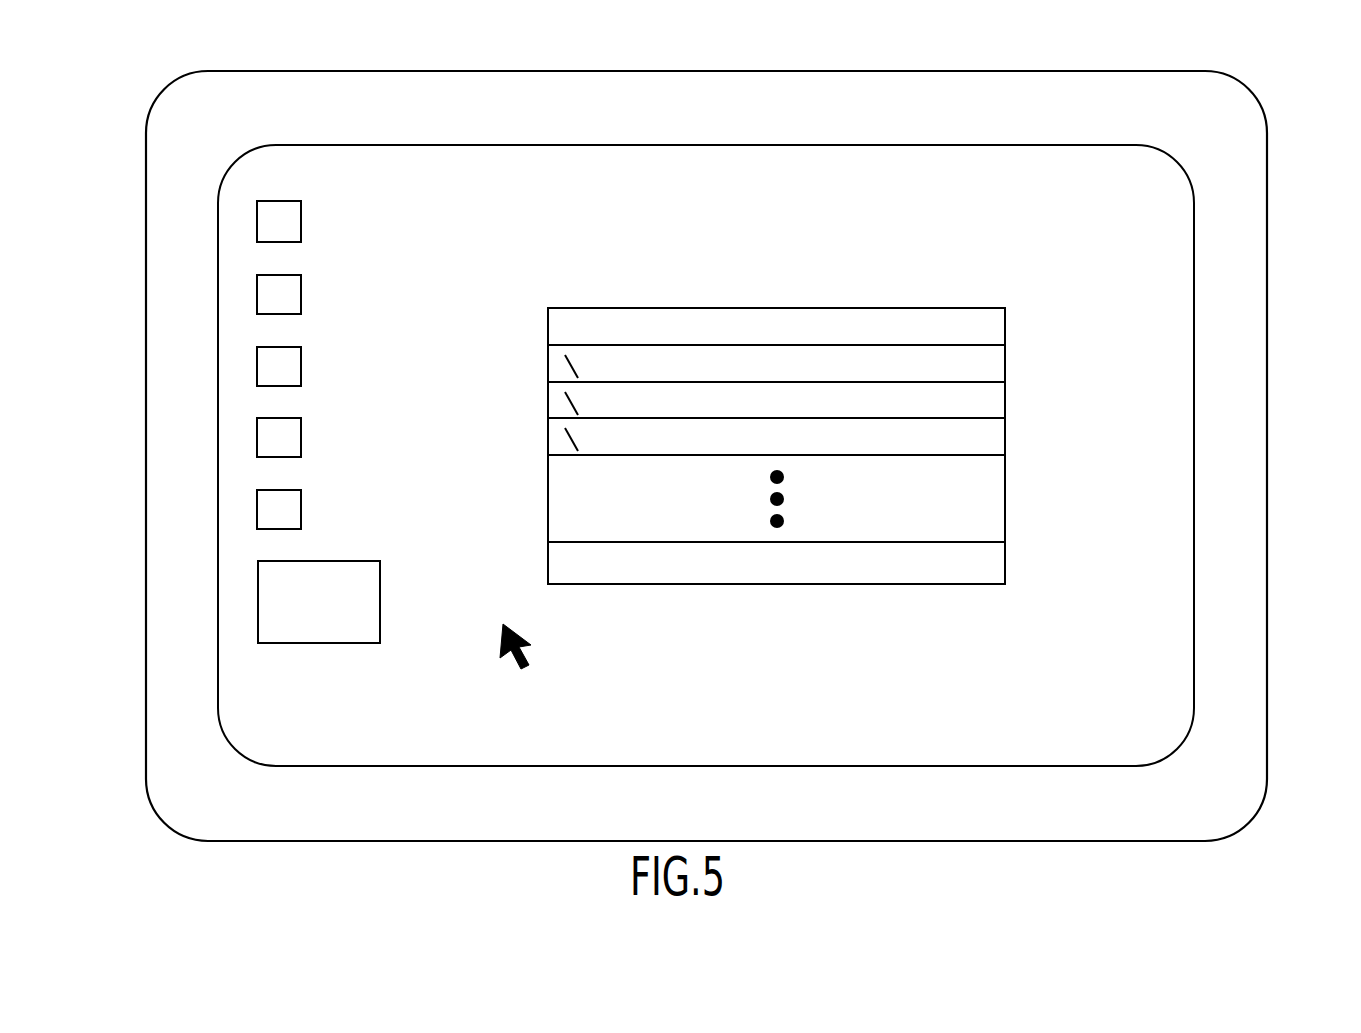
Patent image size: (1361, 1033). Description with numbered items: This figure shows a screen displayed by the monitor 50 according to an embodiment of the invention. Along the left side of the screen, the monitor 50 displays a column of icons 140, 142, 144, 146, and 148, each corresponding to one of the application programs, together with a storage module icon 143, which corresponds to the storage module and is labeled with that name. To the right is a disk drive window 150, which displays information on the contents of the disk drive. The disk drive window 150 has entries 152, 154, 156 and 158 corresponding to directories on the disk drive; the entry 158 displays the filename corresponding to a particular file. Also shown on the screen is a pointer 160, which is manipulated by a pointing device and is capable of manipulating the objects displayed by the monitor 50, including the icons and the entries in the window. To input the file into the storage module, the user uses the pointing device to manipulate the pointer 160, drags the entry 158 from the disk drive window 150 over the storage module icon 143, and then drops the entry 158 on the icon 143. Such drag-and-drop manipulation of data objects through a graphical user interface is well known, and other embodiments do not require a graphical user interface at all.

The monitor 50 is at (1268, 672).
The icon 140 is at (301, 221).
The icon 142 is at (301, 293).
The storage module icon 143 is at (380, 600).
The icon 144 is at (301, 365).
The icon 146 is at (301, 436).
The icon 148 is at (301, 508).
The disk drive window 150 is at (785, 309).
The entry 152 is at (1005, 363).
The entry 154 is at (1005, 395).
The entry 156 is at (1005, 432).
The entry 158 is at (1005, 562).
The pointer 160 is at (524, 655).